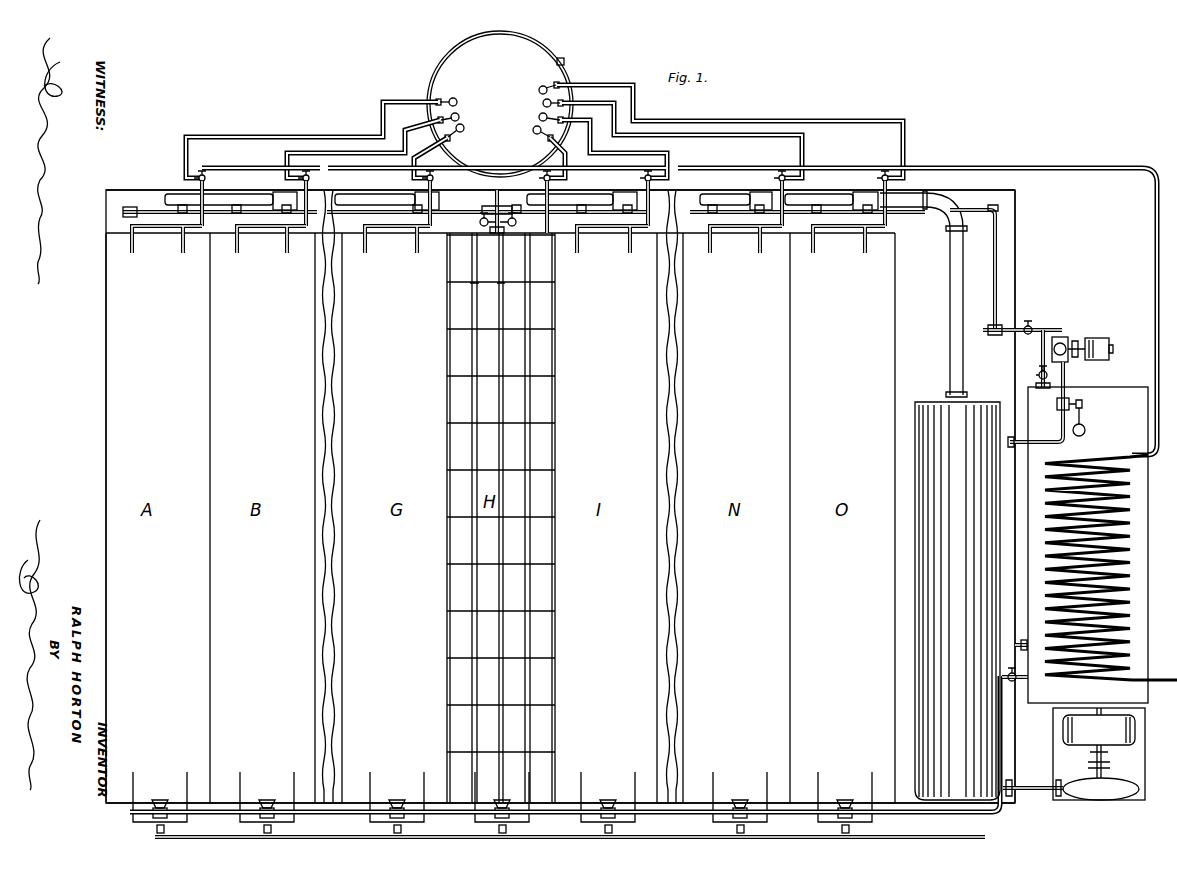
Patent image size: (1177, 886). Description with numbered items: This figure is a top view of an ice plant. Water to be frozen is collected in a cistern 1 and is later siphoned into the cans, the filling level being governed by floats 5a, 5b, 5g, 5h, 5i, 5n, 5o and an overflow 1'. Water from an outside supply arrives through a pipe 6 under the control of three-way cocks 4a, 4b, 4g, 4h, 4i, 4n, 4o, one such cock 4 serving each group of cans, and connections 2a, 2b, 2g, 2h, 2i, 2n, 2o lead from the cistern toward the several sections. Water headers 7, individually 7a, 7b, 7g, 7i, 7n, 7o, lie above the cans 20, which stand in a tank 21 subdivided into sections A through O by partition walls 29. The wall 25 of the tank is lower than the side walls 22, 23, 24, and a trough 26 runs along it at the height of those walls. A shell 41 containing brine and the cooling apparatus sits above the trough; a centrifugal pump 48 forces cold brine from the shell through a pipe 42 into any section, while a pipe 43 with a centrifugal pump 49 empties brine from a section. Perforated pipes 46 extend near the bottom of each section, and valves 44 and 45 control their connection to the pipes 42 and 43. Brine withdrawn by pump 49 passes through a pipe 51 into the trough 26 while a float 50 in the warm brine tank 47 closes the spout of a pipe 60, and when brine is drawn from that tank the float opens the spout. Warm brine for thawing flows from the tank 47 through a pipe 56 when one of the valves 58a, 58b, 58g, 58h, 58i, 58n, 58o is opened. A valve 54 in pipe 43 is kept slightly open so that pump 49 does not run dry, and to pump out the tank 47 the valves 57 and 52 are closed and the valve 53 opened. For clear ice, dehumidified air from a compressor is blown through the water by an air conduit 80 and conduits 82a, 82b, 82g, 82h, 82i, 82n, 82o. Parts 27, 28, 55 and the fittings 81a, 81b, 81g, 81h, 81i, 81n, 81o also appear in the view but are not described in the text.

The cistern 1 is at (500, 104).
The overflow 1' is at (571, 51).
The supply pipe 2a is at (234, 131).
The supply pipe 2b is at (287, 153).
The supply pipe 2g is at (411, 172).
The supply pipe 2h is at (567, 160).
The supply pipe 2i is at (670, 157).
The supply pipe 2n is at (803, 151).
The supply pipe 2o is at (905, 139).
The three-way cock 4 is at (447, 410).
The three-way cock 4a is at (207, 180).
The three-way cock 4b is at (311, 180).
The three-way cock 4g is at (435, 180).
The three-way cock 4h is at (552, 180).
The three-way cock 4i is at (653, 180).
The three-way cock 4n is at (787, 180).
The three-way cock 4o is at (890, 180).
The float 5a is at (456, 99).
The float 5b is at (459, 114).
The float 5g is at (465, 128).
The float 5h is at (533, 130).
The float 5i is at (539, 116).
The float 5n is at (543, 102).
The float 5o is at (540, 87).
The water supply pipe 6 is at (1036, 166).
The water header 7 is at (1099, 743).
The water header 7a is at (181, 256).
The water header 7b is at (285, 256).
The water header 7g is at (415, 256).
The water header 7i is at (628, 256).
The water header 7n is at (758, 256).
The water header 7o is at (863, 256).
The can 20 is at (548, 438).
The tank 21 is at (106, 388).
The side wall 22 is at (106, 512).
The side wall 23 is at (120, 806).
The side wall 24 is at (895, 546).
The lower wall 25 is at (106, 238).
The trough 26 is at (112, 196).
The end wall 27 is at (1017, 263).
The tank cover 28 is at (161, 190).
The partition wall 29 is at (318, 406).
The cooling shell 41 is at (957, 601).
The brine discharge pipe 42 is at (950, 276).
The brine withdrawing pipe 43 is at (993, 284).
The valve 44 is at (516, 222).
The valve 45 is at (480, 222).
The perforated pipe 46 is at (527, 283).
The warm brine tank 47 is at (1140, 592).
The centrifugal pump 48 is at (1140, 762).
The centrifugal pump 49 is at (1104, 338).
The float 50 is at (1086, 431).
The pipe 51 is at (1040, 442).
The valve 52 is at (1031, 325).
The valve 53 is at (1040, 371).
The valve 54 is at (983, 334).
The valve 55 is at (1016, 643).
The warm brine pipe 56 is at (1003, 720).
The valve 57 is at (1021, 682).
The valve 58a is at (172, 792).
The valve 58b is at (279, 792).
The valve 58g is at (409, 792).
The valve 58h is at (514, 792).
The valve 58i is at (620, 792).
The valve 58n is at (752, 792).
The valve 58o is at (857, 792).
The pipe 60 is at (1040, 792).
The air conduit 80 is at (993, 842).
The drain cock 81a is at (165, 830).
The drain cock 81b is at (272, 830).
The drain cock 81g is at (402, 830).
The drain cock 81h is at (507, 830).
The drain cock 81i is at (613, 830).
The drain cock 81n is at (745, 830).
The drain cock 81o is at (850, 830).
The air conduit 82a is at (186, 772).
The air conduit 82b is at (293, 772).
The air conduit 82g is at (423, 772).
The air conduit 82h is at (528, 772).
The air conduit 82i is at (634, 772).
The air conduit 82n is at (766, 772).
The air conduit 82o is at (871, 772).